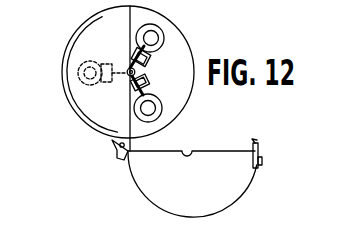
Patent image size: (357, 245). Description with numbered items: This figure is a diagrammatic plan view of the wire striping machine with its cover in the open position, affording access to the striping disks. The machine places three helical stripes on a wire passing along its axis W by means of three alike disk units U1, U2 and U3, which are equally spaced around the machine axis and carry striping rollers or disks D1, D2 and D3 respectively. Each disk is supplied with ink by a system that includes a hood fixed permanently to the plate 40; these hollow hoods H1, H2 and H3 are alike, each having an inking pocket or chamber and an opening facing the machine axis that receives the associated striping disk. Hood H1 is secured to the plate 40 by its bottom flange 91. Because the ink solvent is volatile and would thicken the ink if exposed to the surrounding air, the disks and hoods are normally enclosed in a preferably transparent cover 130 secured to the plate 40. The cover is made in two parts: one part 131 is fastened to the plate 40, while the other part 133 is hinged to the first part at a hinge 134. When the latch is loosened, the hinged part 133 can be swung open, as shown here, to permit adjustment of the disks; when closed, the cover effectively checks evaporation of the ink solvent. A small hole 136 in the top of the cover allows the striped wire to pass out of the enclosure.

The cover 130 is at (84, 119).
The first cover part 131 is at (84, 47).
The bottom flange 91 is at (67, 95).
The hub shaft W is at (135, 72).
The striping disk D1 is at (119, 78).
The striping disk D2 is at (129, 69).
The striping disk D3 is at (138, 81).
The disk unit U1 is at (118, 67).
The disk unit U2 is at (151, 57).
The disk unit U3 is at (133, 85).
The hood H1 is at (78, 74).
The hood H2 is at (157, 37).
The hood H3 is at (158, 109).
The plate 40 is at (146, 133).
The hinged cover part 133 is at (142, 177).
The hinge 134 is at (118, 146).
The hole 136 is at (193, 153).